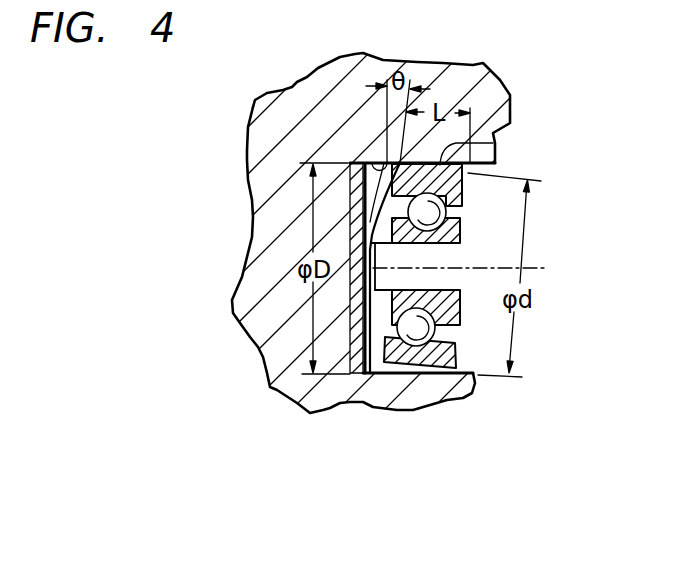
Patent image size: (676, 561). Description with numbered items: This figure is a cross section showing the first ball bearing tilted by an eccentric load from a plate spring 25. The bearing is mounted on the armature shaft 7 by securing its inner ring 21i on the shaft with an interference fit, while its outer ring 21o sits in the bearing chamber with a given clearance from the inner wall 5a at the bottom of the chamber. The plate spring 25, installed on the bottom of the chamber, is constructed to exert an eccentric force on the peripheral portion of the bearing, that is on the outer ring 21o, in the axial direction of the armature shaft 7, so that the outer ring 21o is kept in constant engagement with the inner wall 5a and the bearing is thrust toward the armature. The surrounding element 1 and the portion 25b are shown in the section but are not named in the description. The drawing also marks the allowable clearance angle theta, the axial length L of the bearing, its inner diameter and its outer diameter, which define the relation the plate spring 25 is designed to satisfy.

The housing 1 is at (478, 67).
The plate spring 25 is at (352, 162).
The seal lip 25b is at (381, 162).
The inner wall 5a is at (470, 170).
The armature shaft 7 is at (338, 280).
The outer ring 21o is at (497, 144).
The inner ring 21i is at (462, 222).